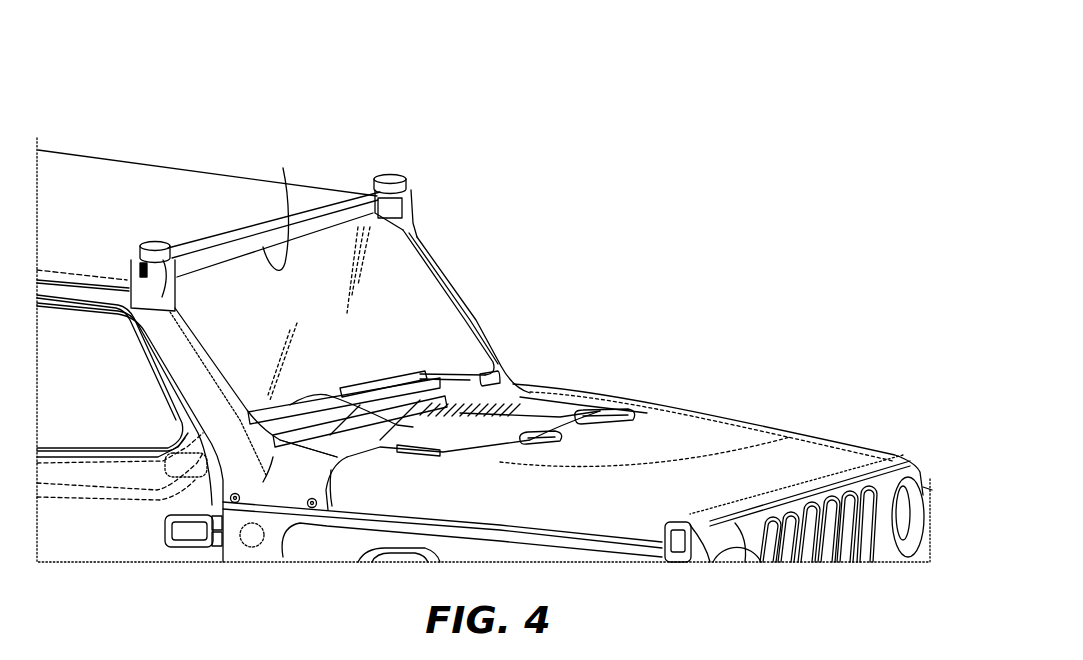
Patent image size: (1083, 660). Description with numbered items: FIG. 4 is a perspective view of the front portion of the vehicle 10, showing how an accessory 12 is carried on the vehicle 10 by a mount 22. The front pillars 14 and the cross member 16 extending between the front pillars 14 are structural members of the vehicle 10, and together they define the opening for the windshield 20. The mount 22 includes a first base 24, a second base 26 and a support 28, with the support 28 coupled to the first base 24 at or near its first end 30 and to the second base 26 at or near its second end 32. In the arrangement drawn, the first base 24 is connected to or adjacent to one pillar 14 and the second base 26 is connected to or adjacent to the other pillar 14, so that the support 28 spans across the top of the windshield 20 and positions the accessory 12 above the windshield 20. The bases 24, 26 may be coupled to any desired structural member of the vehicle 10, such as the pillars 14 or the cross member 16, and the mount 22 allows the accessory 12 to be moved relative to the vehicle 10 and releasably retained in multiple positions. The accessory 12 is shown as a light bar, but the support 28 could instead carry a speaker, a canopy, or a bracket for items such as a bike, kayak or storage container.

The vehicle 10 is at (524, 214).
The accessory 12 is at (331, 196).
The front pillar 14 is at (453, 280).
The cross member 16 is at (276, 206).
The windshield 20 is at (390, 283).
The mount 22 is at (421, 160).
The first base 24 is at (156, 223).
The second base 26 is at (392, 166).
The support 28 is at (207, 245).
The first end 30 is at (142, 256).
The second end 32 is at (408, 185).